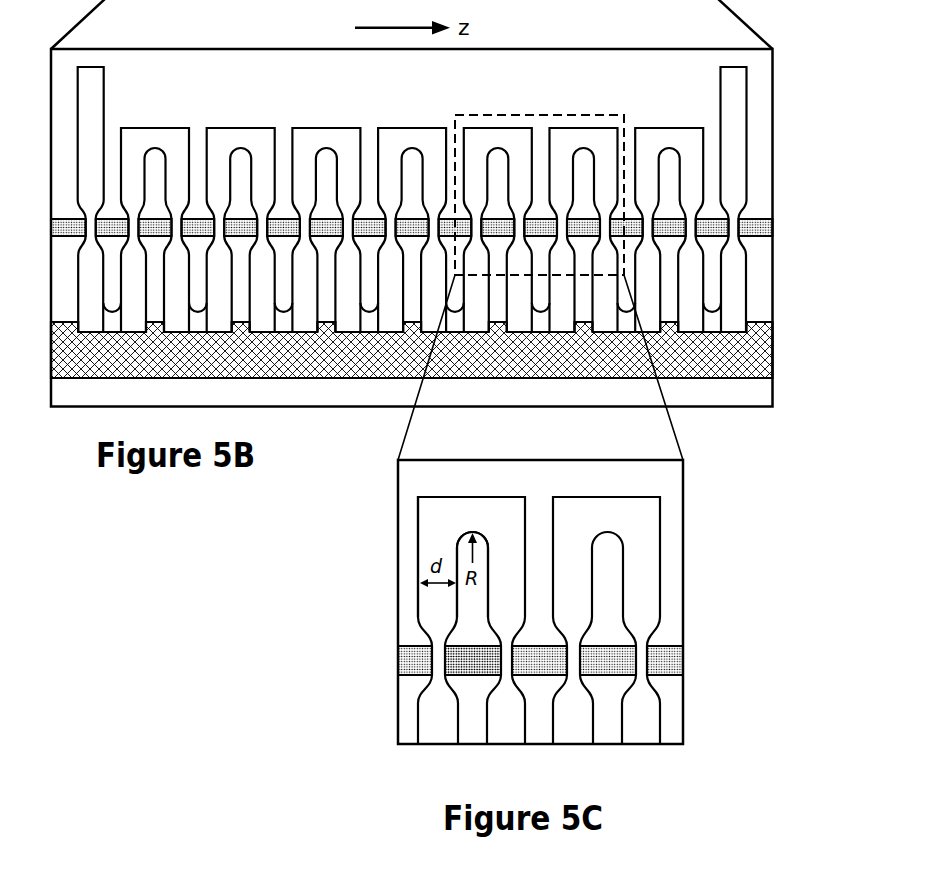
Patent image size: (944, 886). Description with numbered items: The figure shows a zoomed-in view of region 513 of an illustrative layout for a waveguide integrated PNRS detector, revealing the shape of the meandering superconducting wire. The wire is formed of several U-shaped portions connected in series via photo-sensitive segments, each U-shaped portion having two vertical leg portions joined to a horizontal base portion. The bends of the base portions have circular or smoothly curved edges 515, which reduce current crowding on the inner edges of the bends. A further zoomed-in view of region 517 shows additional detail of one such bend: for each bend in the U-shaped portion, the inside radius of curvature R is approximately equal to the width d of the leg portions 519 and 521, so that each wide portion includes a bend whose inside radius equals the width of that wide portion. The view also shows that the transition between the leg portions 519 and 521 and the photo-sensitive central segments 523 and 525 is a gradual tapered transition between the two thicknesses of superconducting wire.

In FIG. 5B, the region 513 is at (773, 90).
In FIG. 5B, the curved edges 515 is at (410, 138).
In FIG. 5C, the curved edges 515 is at (545, 460).
In FIG. 5B, the region 517 is at (547, 115).
In FIG. 5C, the leg portion 519 is at (419, 551).
In FIG. 5C, the leg portion 521 is at (478, 589).
In FIG. 5C, the photo-sensitive central segment 523 is at (430, 675).
In FIG. 5C, the photo-sensitive central segment 525 is at (497, 665).